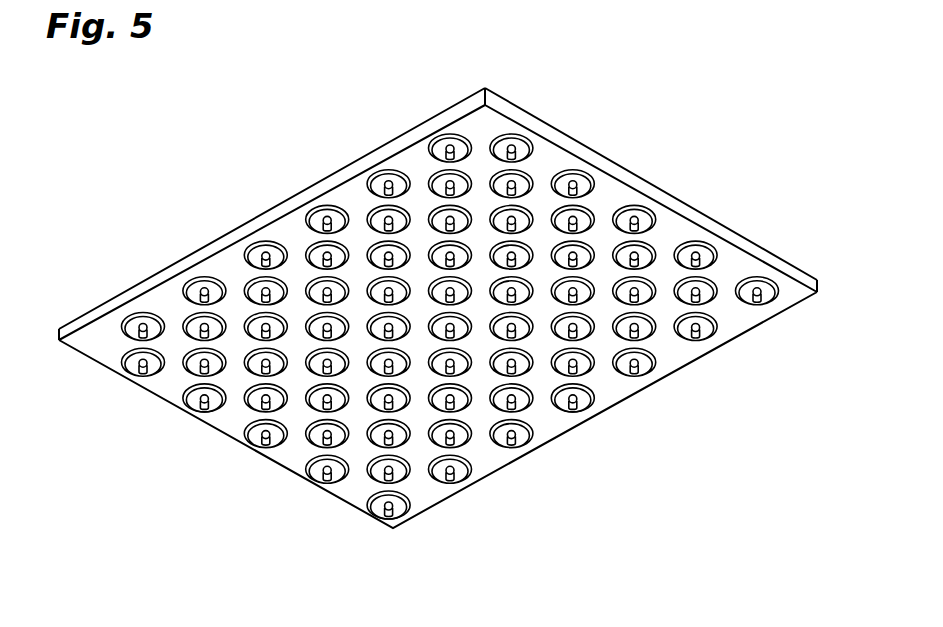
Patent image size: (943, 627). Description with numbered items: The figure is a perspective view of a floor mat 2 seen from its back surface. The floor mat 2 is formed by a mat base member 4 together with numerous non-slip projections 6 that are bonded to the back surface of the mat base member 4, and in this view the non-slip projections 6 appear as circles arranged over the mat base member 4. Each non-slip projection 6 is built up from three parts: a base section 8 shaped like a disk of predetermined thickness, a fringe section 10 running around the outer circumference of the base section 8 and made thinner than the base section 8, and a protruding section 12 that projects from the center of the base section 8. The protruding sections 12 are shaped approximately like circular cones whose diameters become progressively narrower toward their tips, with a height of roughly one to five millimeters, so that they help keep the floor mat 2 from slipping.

The floor mat 2 is at (438, 280).
The mat base member 4 is at (752, 242).
The non-slip projection 6 is at (438, 315).
The base section 8 is at (198, 413).
The fringe section 10 is at (219, 413).
The protruding section 12 is at (184, 398).